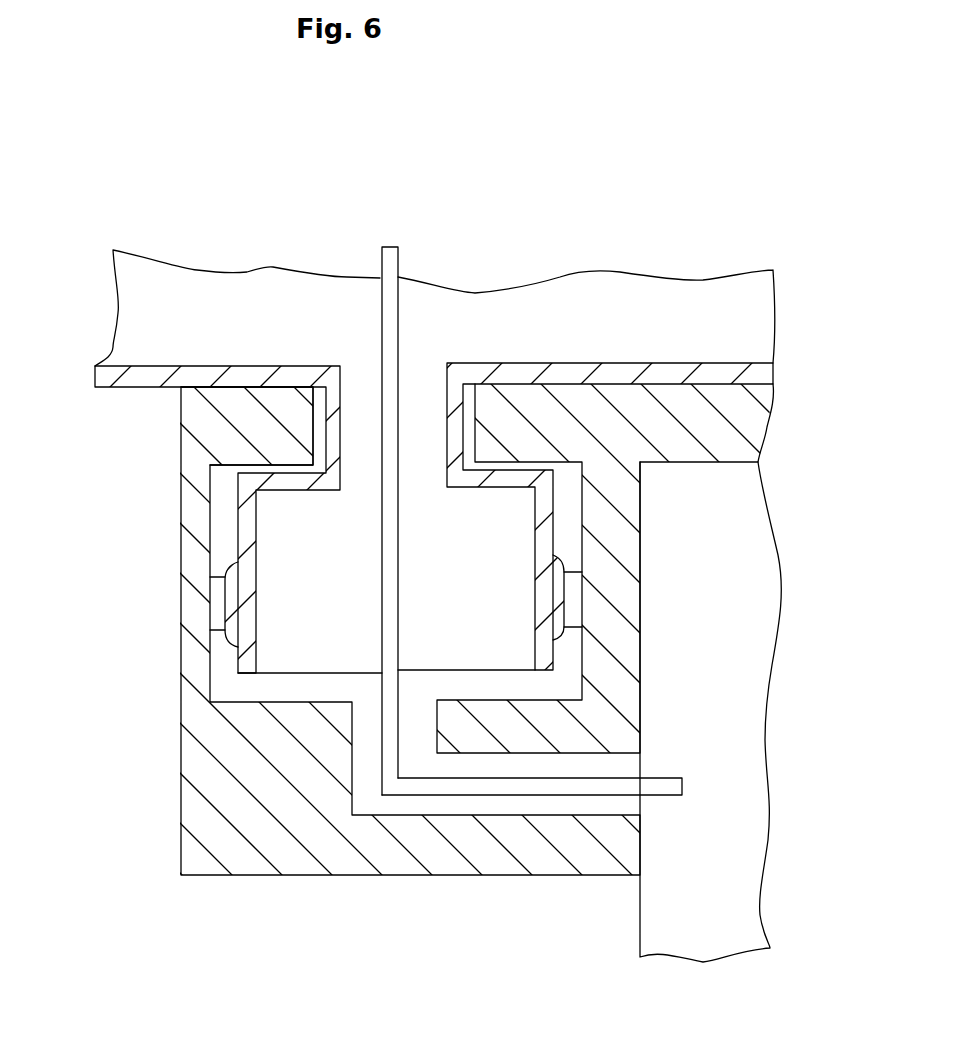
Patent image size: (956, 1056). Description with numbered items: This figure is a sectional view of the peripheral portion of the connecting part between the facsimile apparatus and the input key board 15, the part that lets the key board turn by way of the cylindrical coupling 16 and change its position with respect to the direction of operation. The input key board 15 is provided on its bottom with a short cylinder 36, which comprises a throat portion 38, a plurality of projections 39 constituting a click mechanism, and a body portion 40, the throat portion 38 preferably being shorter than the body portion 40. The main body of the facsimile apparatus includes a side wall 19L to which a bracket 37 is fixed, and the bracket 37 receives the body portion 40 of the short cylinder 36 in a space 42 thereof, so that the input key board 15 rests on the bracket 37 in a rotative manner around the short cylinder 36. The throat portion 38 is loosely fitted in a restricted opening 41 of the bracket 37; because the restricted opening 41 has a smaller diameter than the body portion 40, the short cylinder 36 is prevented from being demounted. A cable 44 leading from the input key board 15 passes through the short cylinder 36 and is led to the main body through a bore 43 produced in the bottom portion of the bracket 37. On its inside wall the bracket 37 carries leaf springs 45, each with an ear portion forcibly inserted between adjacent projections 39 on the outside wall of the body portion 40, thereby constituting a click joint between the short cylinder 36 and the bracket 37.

The input key board 15 is at (740, 306).
The cylindrical coupling 16 is at (478, 591).
The side wall 19L is at (652, 917).
The short cylinder 36 is at (315, 519).
The bracket 37 is at (181, 660).
The throat portion 38 is at (322, 433).
The projections 39 is at (229, 582).
The body portion 40 is at (243, 509).
The restricted opening 41 is at (425, 382).
The space 42 is at (563, 513).
The bore 43 is at (383, 805).
The cable 44 is at (397, 250).
The leaf springs 45 is at (218, 607).